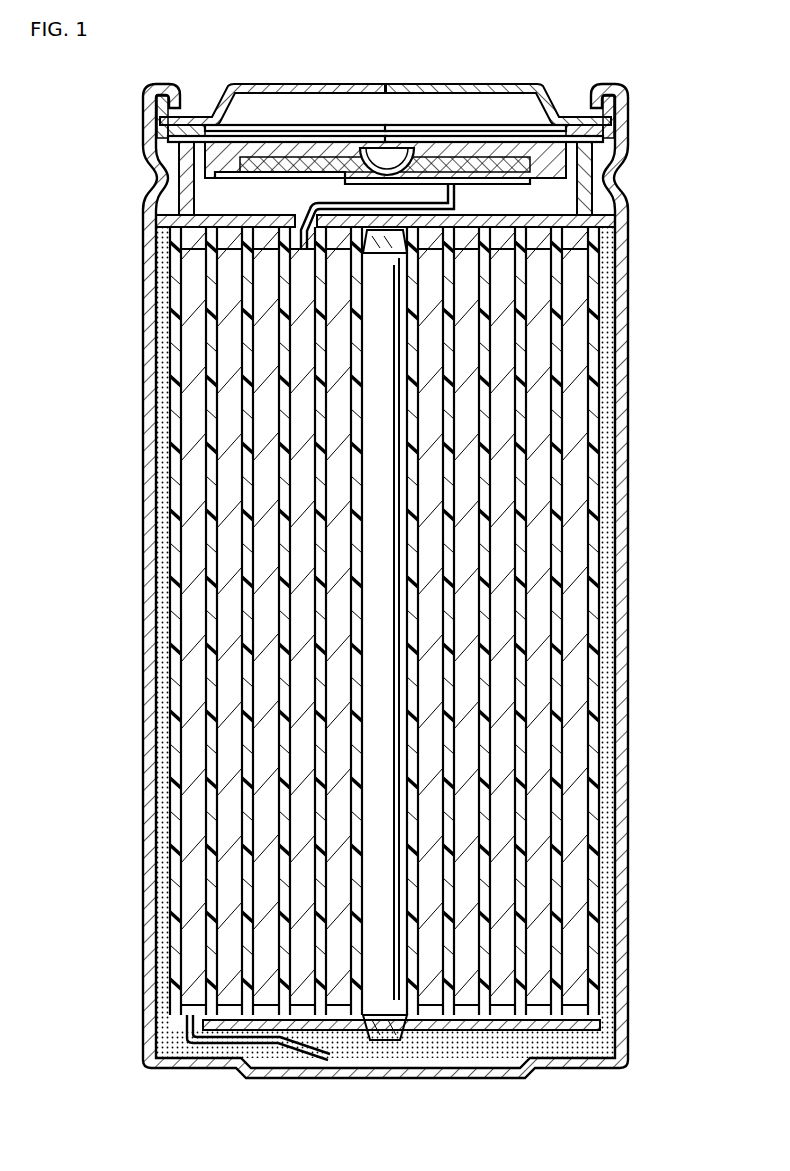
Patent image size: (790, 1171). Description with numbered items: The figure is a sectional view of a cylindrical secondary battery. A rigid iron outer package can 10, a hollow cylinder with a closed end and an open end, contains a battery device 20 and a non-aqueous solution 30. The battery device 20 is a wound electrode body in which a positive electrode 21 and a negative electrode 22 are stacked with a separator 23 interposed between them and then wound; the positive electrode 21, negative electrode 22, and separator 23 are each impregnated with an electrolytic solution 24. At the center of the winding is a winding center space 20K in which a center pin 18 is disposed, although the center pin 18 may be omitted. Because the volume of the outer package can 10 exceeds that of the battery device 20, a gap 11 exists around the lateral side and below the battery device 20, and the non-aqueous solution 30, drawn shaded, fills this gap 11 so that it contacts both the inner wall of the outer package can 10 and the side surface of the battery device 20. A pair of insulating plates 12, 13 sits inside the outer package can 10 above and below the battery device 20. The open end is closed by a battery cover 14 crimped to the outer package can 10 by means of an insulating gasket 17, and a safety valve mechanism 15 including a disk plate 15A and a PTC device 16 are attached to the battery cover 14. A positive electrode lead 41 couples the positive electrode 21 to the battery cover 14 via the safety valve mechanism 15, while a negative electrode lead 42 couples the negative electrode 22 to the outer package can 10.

The outer package can 10 is at (622, 275).
The gap 11 is at (612, 815).
The insulating plate 12 is at (612, 218).
The insulating plate 13 is at (600, 1028).
The battery cover 14 is at (351, 82).
The safety valve mechanism 15 is at (505, 128).
The disk plate 15A is at (460, 150).
The positive-temperature-coefficient (PTC) device 16 is at (603, 129).
The gasket 17 is at (590, 170).
The center pin 18 is at (378, 655).
The battery device 20 is at (592, 355).
The winding center space 20K is at (398, 958).
The positive electrode 21 is at (548, 442).
The negative electrode 22 is at (578, 497).
The separator 23 is at (543, 575).
The electrolytic solution 24 is at (574, 765).
The non-aqueous solution 30 is at (608, 883).
The positive electrode lead 41 is at (356, 152).
The negative electrode lead 42 is at (287, 1050).